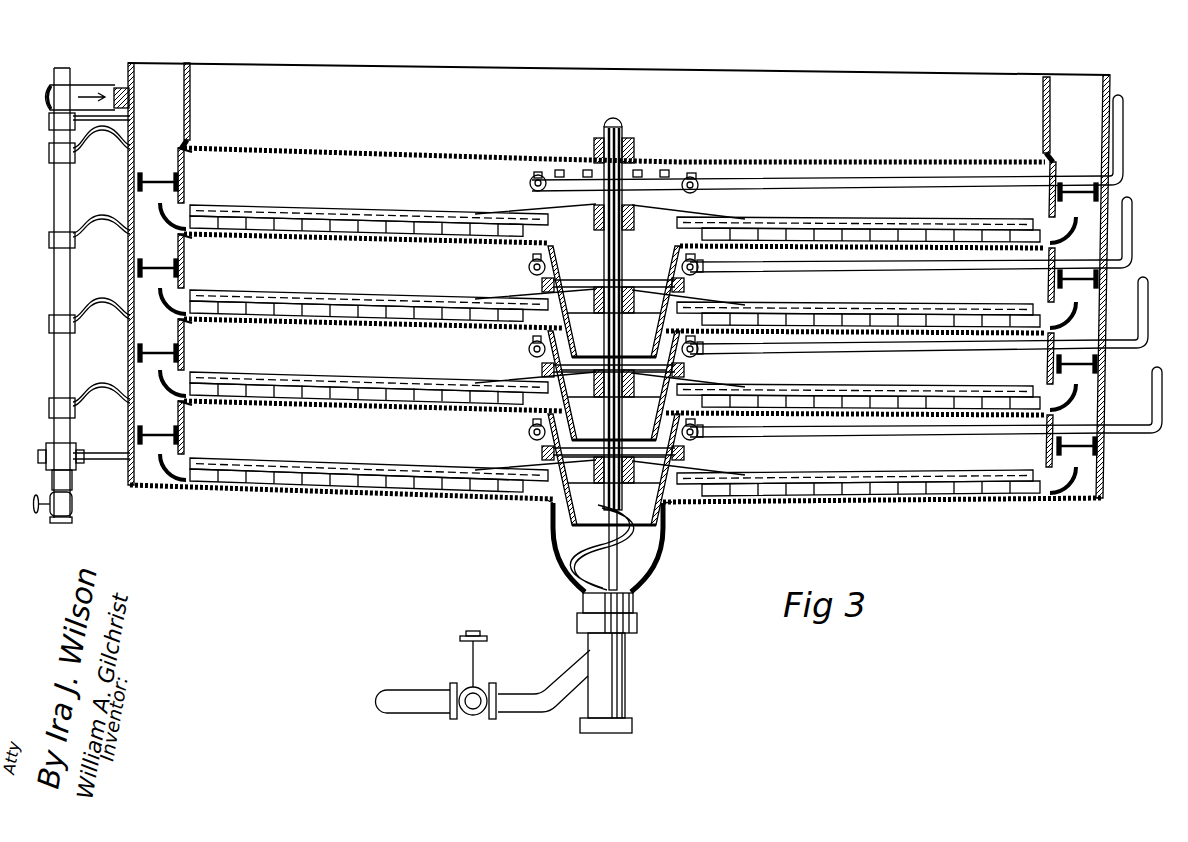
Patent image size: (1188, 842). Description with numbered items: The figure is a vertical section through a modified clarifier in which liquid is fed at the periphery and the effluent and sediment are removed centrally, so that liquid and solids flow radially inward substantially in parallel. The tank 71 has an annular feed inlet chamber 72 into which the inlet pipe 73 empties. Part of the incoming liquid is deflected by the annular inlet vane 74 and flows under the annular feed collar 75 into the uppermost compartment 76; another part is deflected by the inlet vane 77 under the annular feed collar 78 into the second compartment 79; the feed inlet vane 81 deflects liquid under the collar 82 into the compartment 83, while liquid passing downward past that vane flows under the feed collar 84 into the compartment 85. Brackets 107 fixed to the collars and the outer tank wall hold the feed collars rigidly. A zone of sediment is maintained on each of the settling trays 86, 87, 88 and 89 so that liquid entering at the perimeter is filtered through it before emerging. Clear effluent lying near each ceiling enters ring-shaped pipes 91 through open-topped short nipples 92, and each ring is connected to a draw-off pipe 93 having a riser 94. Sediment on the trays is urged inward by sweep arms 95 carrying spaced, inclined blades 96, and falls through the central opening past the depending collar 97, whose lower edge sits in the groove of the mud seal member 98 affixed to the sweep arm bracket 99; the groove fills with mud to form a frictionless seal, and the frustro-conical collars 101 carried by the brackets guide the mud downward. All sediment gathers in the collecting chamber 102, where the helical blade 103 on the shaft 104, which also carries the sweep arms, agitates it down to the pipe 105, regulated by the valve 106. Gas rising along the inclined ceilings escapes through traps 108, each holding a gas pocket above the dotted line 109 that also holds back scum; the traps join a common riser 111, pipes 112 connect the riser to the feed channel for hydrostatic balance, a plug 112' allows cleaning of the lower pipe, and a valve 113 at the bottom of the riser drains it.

The tank 71 is at (1100, 468).
The annular feed inlet chamber 72 is at (161, 68).
The inlet pipe 73 is at (88, 87).
The annular inlet vane 74 is at (178, 222).
The annular feed collar 75 is at (188, 203).
The uppermost compartment 76 is at (529, 196).
The inlet vane 77 is at (195, 300).
The annular feed collar 78 is at (188, 287).
The second compartment 79 is at (509, 280).
The feed inlet vane 81 is at (185, 387).
The collar 82 is at (182, 372).
The compartment 83 is at (525, 363).
The feed collar 84 is at (595, 434).
The compartment 85 is at (506, 449).
The settling tray 86 is at (398, 244).
The settling tray 87 is at (427, 328).
The settling tray 88 is at (413, 412).
The settling tray 89 is at (403, 494).
The pipe 91 is at (536, 175).
The short nipple 92 is at (560, 170).
The draw-off pipe 93 is at (818, 177).
The riser 94 is at (1120, 138).
The sweep arm 95 is at (418, 216).
The blade 96 is at (405, 227).
The depending collar 97 is at (551, 282).
The mud seal member 98 is at (683, 290).
The sweep arm bracket 99 is at (614, 381).
The frustro-conical collar 101 is at (566, 328).
The collecting chamber 102 is at (551, 541).
The helical blade 103 is at (645, 585).
The shaft 104 is at (618, 496).
The pipe 105 is at (556, 677).
The valve 106 is at (478, 715).
The bracket 107 is at (130, 462).
The trap 108 is at (108, 218).
The dotted line 109 is at (196, 150).
The riser 111 is at (70, 269).
The pipe 112 is at (106, 289).
The plug 112' is at (84, 483).
The valve 113 is at (68, 506).